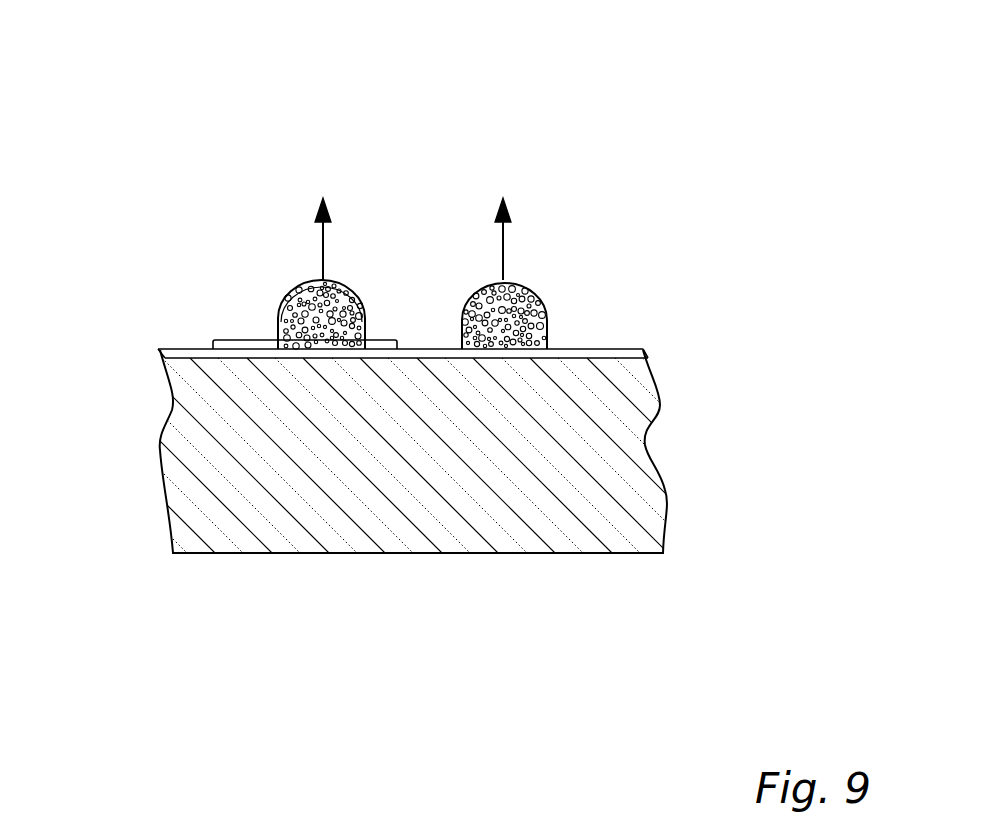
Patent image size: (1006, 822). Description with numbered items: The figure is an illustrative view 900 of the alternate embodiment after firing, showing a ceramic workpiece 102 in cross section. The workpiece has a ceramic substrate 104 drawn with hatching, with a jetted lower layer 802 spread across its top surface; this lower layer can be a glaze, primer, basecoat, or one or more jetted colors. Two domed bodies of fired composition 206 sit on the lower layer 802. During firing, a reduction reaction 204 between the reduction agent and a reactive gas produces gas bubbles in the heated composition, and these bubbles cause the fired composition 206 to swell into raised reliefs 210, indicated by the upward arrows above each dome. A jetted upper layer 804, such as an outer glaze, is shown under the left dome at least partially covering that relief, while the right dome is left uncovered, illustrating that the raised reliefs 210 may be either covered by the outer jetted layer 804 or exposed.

The illustrative view of fired embodiment 900 is at (876, 138).
The ceramic workpiece 102 is at (675, 288).
The ceramic substrate 104 is at (353, 553).
The jetted lower layer 802 is at (158, 352).
The jetted upper layer 804 is at (240, 340).
The reduction reaction 204 is at (488, 278).
The fired composition 206 is at (549, 325).
The raised reliefs 210 is at (322, 243).